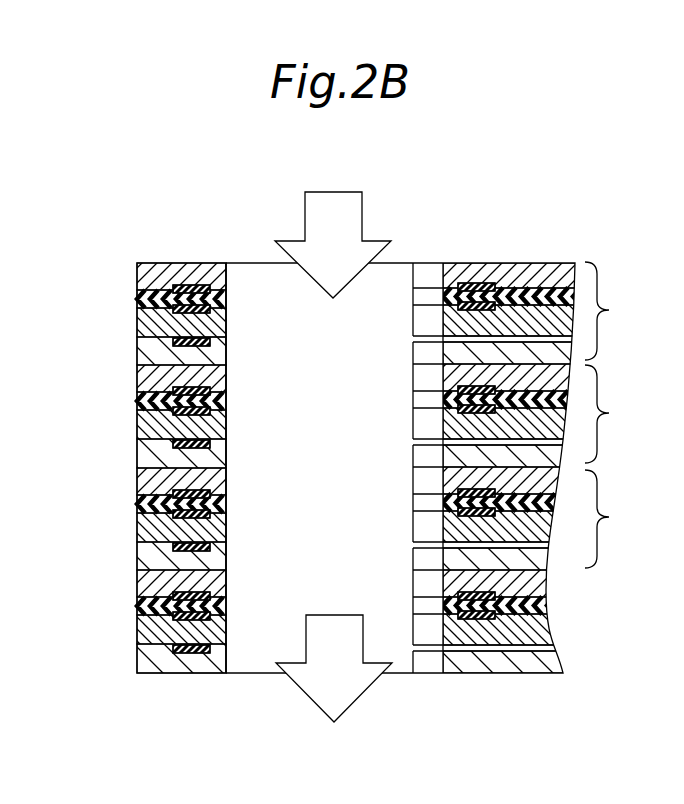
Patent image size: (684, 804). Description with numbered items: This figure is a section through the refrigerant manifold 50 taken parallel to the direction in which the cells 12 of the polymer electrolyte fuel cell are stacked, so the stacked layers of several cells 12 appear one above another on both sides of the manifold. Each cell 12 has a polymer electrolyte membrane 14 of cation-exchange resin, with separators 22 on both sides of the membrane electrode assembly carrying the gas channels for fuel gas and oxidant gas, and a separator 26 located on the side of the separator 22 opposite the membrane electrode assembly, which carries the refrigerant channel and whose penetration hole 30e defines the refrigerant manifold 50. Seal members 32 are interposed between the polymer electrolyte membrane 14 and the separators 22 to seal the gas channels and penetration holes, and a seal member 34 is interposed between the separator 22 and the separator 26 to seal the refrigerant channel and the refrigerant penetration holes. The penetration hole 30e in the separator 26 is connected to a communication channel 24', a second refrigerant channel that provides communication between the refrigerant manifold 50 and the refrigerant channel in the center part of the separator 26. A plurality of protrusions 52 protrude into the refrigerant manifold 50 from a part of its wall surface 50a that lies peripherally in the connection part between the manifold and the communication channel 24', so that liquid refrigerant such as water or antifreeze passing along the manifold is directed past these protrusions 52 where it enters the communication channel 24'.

The cell 12 is at (617, 415).
The polymer electrolyte membrane 14 is at (138, 297).
The separator 22 is at (138, 273).
The communication channel 24' is at (497, 485).
The separator 26 is at (138, 350).
The penetration hole 30e is at (385, 486).
The seal member 32 is at (212, 288).
The seal member 34 is at (213, 341).
The refrigerant manifold 50 is at (319, 457).
The wall surface 50a is at (228, 556).
The protrusion 52 is at (413, 280).